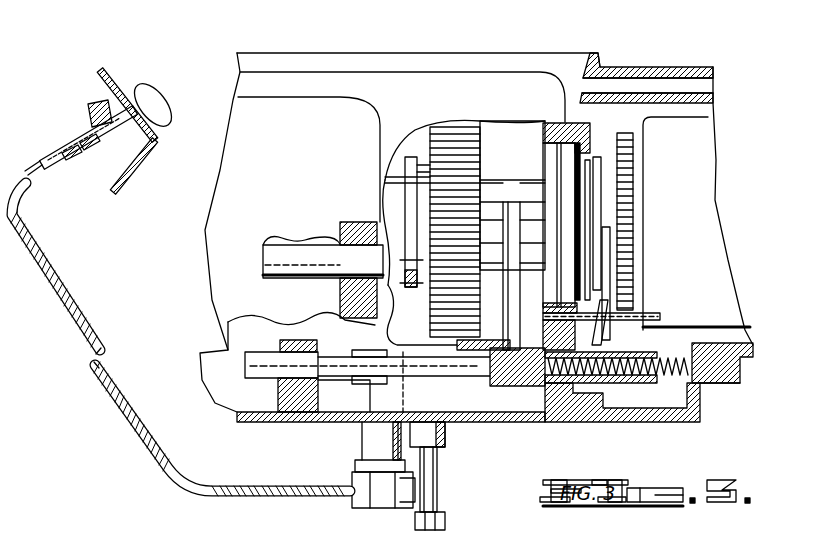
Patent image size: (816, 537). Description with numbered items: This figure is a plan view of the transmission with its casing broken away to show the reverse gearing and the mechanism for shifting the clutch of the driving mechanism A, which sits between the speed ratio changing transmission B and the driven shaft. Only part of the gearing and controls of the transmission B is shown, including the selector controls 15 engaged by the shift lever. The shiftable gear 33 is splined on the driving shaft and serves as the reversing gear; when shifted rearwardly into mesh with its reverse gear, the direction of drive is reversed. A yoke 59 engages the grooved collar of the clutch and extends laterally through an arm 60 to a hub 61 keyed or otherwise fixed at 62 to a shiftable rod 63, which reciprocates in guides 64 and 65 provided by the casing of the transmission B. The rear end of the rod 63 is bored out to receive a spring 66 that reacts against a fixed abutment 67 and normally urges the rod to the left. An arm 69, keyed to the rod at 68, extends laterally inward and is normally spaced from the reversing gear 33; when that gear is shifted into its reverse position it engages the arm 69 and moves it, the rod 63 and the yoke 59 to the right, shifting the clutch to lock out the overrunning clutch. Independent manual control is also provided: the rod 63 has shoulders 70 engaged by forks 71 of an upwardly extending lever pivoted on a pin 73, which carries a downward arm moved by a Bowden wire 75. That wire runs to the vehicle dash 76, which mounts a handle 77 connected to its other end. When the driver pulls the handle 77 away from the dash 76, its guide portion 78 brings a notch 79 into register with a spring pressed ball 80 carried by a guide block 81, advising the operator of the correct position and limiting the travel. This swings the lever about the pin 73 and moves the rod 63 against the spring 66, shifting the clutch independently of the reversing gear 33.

The driving mechanism A is at (396, 75).
The speed ratio changing transmission B is at (688, 120).
The selector controls 15 is at (303, 243).
The shiftable gear 33 is at (483, 163).
The yoke 59 is at (603, 255).
The arm 60 is at (607, 290).
The hub 61 is at (628, 395).
The keying point 62 is at (612, 345).
The shiftable rod 63 is at (418, 347).
The guide 64 is at (528, 392).
The guide 65 is at (293, 340).
The spring 66 is at (685, 352).
The fixed abutment 67 is at (712, 390).
The keying point 68 is at (478, 395).
The arm 69 is at (512, 312).
The shoulders 70 is at (393, 350).
The forks 71 is at (362, 348).
The pin 73 is at (362, 438).
The Bowden wire 75 is at (330, 494).
The vehicle dash 76 is at (105, 72).
The handle 77 is at (160, 93).
The guide portion 78 is at (45, 175).
The notch 79 is at (70, 145).
The spring pressed ball 80 is at (100, 140).
The guide block 81 is at (92, 152).